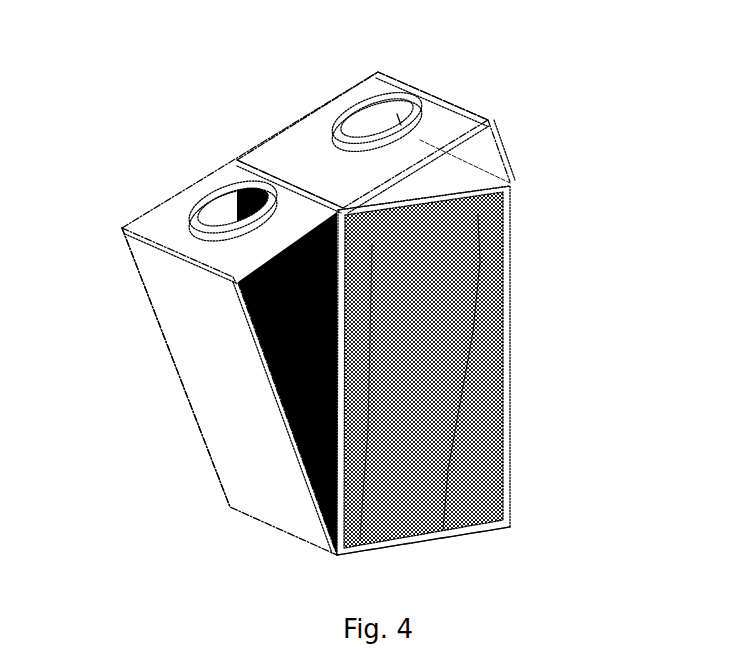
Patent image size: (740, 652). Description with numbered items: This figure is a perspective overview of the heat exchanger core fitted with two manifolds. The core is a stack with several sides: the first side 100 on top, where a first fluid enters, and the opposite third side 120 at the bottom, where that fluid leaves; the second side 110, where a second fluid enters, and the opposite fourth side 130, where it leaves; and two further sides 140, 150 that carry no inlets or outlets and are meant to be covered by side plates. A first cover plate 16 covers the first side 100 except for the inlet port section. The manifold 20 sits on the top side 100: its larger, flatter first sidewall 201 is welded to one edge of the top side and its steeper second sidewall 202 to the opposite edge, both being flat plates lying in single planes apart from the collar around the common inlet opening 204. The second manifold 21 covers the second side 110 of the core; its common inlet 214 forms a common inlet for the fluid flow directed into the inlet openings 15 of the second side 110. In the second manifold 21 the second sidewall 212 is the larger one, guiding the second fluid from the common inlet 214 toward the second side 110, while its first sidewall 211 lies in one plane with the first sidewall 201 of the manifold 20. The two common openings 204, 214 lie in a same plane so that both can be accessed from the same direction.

The manifold 20 is at (311, 111).
The second manifold 21 is at (134, 268).
The inlet openings 15 is at (258, 350).
The first cover plate 16 is at (457, 175).
The first side 100 is at (430, 197).
The second side 110 is at (284, 402).
The third side 120 is at (441, 531).
The fourth side 130 is at (511, 340).
The side of the heat exchanger core 140 is at (413, 395).
The side of the heat exchanger core 150 is at (260, 129).
The first sidewall 201 is at (441, 118).
The second sidewall 202 is at (503, 160).
The common inlet opening 204 is at (384, 104).
The first sidewall 211 is at (168, 217).
The second sidewall 212 is at (203, 370).
The common inlet 214 is at (227, 193).